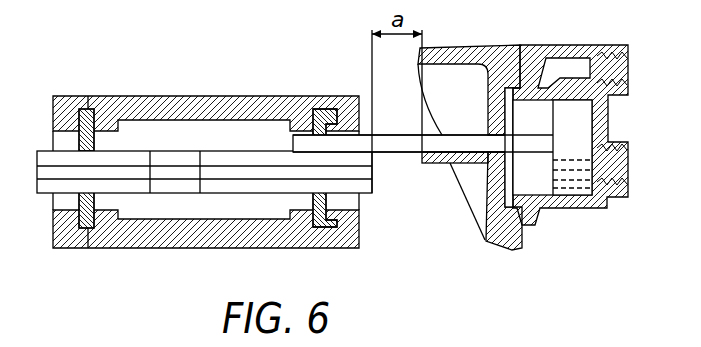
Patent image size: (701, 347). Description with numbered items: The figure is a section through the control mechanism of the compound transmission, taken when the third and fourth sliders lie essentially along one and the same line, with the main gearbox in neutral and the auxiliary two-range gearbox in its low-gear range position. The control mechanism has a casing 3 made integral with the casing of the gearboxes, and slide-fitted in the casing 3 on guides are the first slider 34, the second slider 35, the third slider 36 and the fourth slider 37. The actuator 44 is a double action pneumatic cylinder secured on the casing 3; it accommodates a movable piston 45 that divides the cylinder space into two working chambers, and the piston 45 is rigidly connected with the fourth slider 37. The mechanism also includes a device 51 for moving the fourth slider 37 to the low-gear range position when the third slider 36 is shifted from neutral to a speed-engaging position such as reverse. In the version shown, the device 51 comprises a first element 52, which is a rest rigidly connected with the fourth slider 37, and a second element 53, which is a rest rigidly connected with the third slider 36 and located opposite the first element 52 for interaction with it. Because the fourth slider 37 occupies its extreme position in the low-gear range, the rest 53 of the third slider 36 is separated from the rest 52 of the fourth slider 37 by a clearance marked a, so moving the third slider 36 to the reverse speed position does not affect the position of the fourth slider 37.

The casing 3 is at (206, 143).
The first slider 34 is at (259, 185).
The second slider 35 is at (214, 175).
The third slider 36 is at (234, 160).
The fourth slider 37 is at (467, 143).
The actuator 44 is at (609, 118).
The piston 45 is at (576, 178).
The device 51 is at (402, 153).
The first element 52 is at (415, 155).
The second element 53 is at (372, 158).